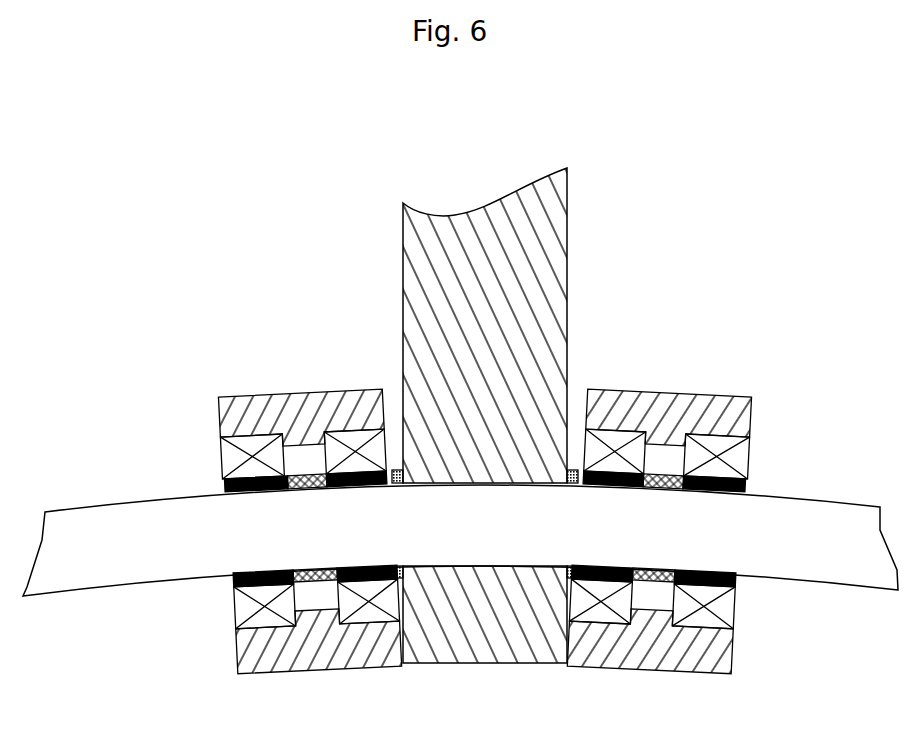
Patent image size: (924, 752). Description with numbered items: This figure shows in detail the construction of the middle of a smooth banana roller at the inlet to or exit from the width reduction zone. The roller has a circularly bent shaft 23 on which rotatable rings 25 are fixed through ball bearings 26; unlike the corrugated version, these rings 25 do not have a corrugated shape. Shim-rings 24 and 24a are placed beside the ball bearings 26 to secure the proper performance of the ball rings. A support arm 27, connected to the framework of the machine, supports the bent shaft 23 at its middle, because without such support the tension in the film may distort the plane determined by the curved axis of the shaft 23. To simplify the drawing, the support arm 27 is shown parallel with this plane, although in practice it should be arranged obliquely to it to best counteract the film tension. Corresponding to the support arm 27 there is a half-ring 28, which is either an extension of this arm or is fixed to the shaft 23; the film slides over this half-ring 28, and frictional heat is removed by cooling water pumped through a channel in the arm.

The bent shaft 23 is at (460, 540).
The shim-ring 24 is at (395, 485).
The shim-ring 24a is at (302, 487).
The ring 25 is at (313, 400).
The ball bearing 26 is at (237, 462).
The support arm 27 is at (416, 297).
The half-ring 28 is at (500, 652).